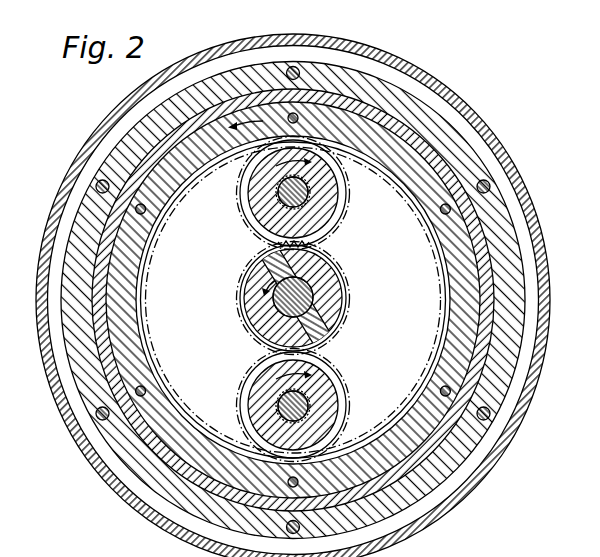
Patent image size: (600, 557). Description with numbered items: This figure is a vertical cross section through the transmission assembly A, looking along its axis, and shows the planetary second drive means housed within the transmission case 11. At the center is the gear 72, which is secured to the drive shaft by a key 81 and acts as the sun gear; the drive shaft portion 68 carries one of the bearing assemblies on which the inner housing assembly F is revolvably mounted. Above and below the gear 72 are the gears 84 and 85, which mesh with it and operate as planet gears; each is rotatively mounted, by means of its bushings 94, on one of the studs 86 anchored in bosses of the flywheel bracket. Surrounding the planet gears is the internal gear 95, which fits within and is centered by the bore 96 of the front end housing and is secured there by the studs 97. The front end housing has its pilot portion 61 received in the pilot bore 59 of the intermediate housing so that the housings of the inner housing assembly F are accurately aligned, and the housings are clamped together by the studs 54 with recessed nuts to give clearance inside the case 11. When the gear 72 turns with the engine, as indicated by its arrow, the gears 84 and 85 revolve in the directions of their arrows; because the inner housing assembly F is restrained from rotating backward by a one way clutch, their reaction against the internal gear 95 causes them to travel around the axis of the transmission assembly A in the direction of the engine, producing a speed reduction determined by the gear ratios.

The transmission assembly A is at (458, 93).
The transmission case 11 is at (462, 112).
The inner housing assembly F is at (440, 153).
The pilot bore 59 is at (482, 163).
The studs 54 is at (297, 69).
The pilot portion 61 is at (482, 232).
The bore 96 is at (482, 253).
The internal gear 95 is at (473, 298).
The studs 97 is at (139, 209).
The bushings 94 is at (277, 197).
The studs 86 is at (306, 188).
The gear 84 is at (350, 207).
The key bar 81 is at (308, 268).
The portion of the drive shaft 68 is at (311, 300).
The gear 72 is at (350, 325).
The gear 85 is at (350, 392).